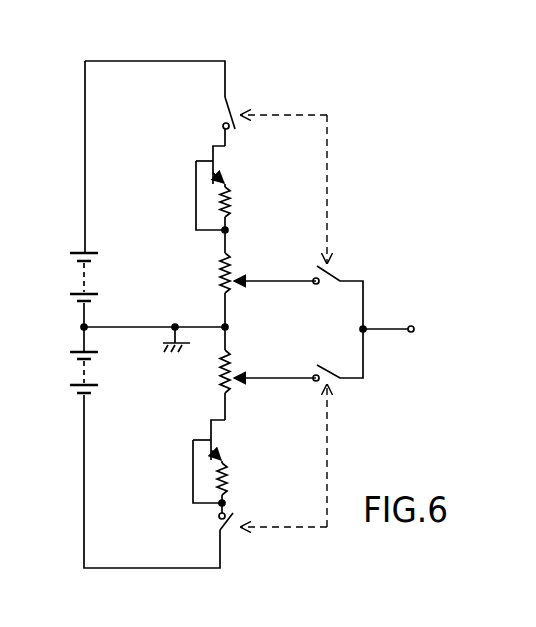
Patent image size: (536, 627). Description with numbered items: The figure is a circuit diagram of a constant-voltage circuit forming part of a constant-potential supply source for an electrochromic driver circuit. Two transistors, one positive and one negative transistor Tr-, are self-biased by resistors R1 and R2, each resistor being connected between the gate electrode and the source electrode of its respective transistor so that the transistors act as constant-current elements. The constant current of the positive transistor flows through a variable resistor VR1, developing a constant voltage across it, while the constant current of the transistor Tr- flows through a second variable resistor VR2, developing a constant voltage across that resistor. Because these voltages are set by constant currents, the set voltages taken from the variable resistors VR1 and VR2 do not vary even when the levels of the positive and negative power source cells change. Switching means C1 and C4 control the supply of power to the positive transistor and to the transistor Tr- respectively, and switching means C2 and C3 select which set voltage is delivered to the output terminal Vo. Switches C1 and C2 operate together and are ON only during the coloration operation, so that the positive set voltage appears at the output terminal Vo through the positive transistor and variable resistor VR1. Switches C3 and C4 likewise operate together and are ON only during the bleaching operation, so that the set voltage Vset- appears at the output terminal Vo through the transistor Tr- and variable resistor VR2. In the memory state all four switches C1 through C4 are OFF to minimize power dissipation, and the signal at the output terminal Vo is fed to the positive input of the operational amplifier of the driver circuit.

The switching means C1 is at (216, 113).
The switching means C2 is at (338, 292).
The switching means C3 is at (338, 370).
The switching means C4 is at (214, 529).
The transistor Tr- is at (224, 440).
The resistor R1 is at (224, 195).
The resistor R2 is at (222, 471).
The variable resistor VR1 is at (208, 274).
The variable resistor VR2 is at (207, 371).
The set voltage Vset- is at (275, 393).
The output terminal Vo is at (400, 330).